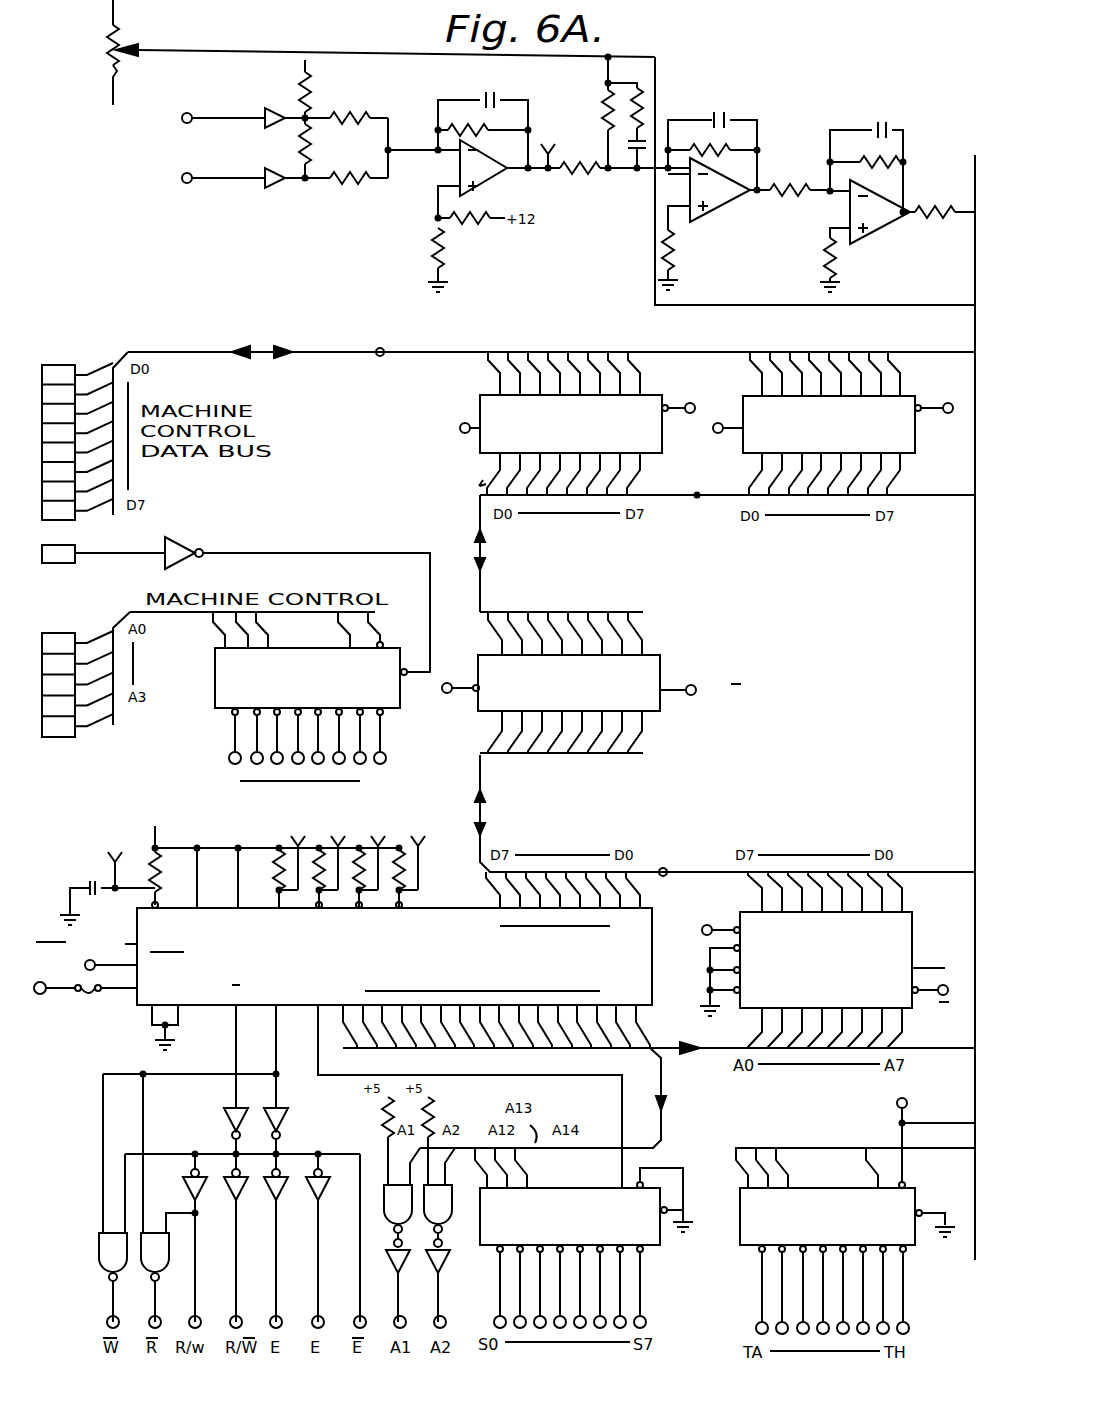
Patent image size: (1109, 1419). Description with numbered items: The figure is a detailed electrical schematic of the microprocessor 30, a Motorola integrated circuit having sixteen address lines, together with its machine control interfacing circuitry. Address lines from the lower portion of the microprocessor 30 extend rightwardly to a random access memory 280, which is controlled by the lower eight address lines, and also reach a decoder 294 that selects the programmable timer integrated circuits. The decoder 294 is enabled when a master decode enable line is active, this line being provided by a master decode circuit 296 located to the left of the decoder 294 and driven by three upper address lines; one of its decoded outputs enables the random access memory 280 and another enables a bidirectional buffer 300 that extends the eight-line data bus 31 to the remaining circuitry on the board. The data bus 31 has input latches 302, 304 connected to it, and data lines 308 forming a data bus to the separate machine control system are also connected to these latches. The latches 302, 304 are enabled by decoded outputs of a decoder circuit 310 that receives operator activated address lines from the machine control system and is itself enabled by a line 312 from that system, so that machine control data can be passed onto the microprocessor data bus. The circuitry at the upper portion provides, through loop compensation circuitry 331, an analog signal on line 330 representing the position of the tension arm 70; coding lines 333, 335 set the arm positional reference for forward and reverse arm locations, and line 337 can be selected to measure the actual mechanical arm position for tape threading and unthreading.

The tension arm 70 is at (126, 38).
The coding line 333 is at (258, 112).
The coding line 335 is at (222, 182).
The loop compensation circuitry 331 is at (853, 120).
The line 330 is at (958, 232).
The line 337 is at (762, 304).
The data lines 308 is at (384, 349).
The line 312 is at (165, 542).
The decoder circuit 310 is at (215, 698).
The input latch 302 is at (662, 465).
The input latch 304 is at (915, 465).
The data bus 31 is at (697, 497).
The bidirectional buffer 300 is at (660, 715).
The microprocessor 30 is at (448, 910).
The random access memory 280 is at (912, 918).
The master decode circuit 296 is at (660, 1246).
The decoder 294 is at (915, 1250).